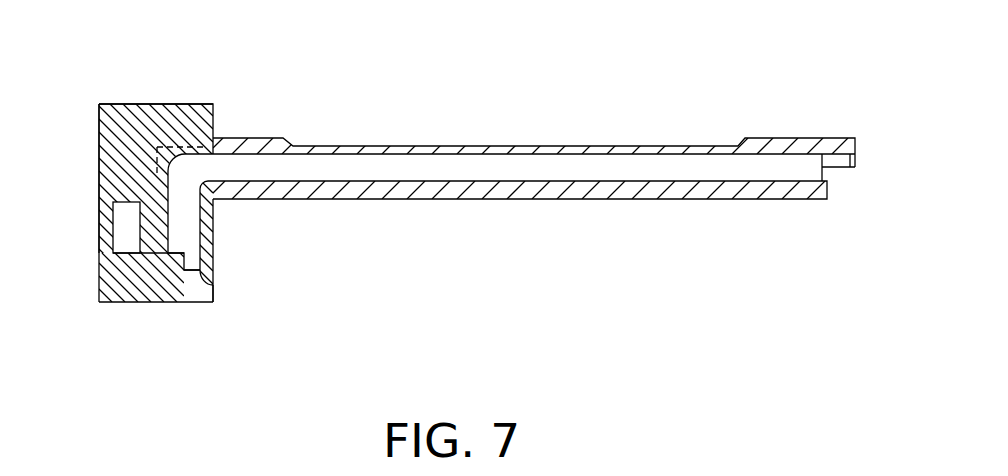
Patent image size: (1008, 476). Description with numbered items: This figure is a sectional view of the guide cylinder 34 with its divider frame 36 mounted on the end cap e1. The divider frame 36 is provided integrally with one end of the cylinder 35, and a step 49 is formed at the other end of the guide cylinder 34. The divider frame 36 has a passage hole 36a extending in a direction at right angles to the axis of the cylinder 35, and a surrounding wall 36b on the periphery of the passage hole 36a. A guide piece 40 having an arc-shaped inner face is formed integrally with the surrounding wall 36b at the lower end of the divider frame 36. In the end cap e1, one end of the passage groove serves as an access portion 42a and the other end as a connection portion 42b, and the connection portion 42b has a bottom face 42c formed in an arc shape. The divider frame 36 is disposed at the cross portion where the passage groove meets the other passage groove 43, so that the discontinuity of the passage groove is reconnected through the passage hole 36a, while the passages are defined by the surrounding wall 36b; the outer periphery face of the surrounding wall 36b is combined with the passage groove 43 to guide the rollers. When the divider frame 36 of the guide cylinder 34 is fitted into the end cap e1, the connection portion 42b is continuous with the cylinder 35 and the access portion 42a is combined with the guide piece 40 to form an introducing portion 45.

The end cap e1 is at (122, 104).
The bottom face 42c is at (197, 149).
The connection portion 42b is at (212, 157).
The passage hole 36a is at (190, 216).
The divider frame 36 is at (224, 255).
The guide piece 40 is at (215, 291).
The introducing portion 45 is at (198, 292).
The access portion 42a is at (180, 286).
The surrounding wall 36b is at (163, 262).
The passage groove 43 is at (100, 288).
The cylinder 35 is at (505, 199).
The guide cylinder 34 is at (617, 205).
The step 49 is at (843, 168).